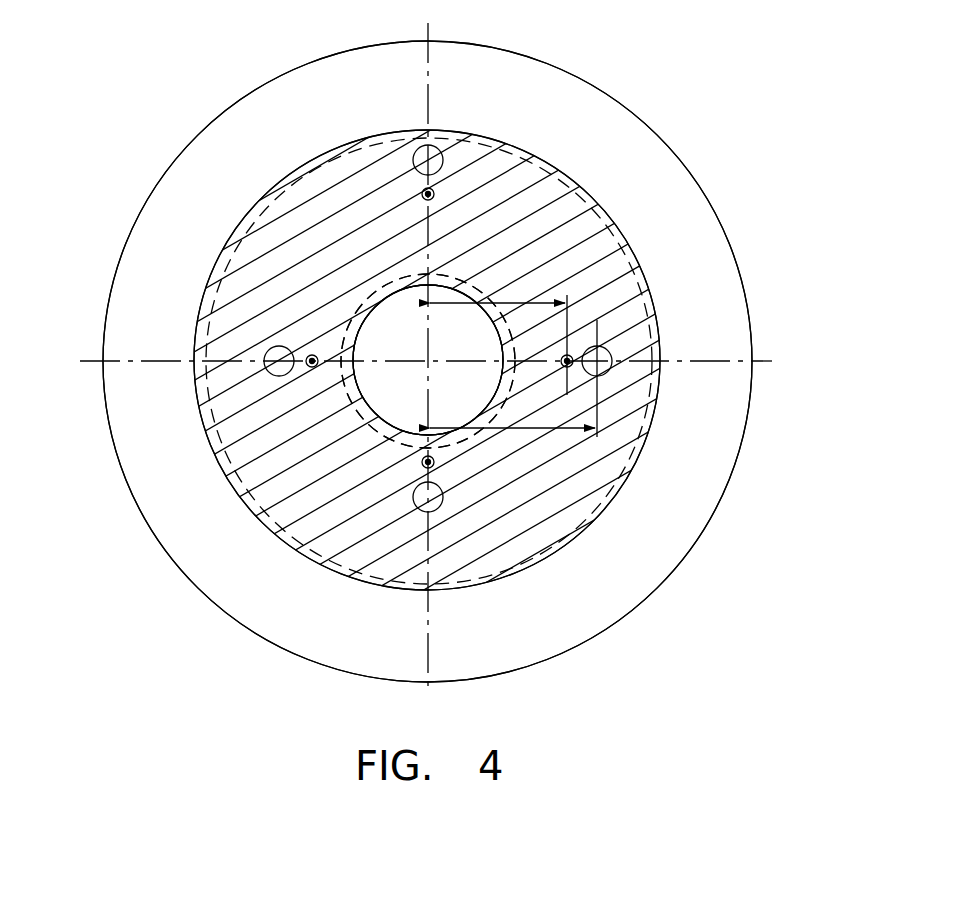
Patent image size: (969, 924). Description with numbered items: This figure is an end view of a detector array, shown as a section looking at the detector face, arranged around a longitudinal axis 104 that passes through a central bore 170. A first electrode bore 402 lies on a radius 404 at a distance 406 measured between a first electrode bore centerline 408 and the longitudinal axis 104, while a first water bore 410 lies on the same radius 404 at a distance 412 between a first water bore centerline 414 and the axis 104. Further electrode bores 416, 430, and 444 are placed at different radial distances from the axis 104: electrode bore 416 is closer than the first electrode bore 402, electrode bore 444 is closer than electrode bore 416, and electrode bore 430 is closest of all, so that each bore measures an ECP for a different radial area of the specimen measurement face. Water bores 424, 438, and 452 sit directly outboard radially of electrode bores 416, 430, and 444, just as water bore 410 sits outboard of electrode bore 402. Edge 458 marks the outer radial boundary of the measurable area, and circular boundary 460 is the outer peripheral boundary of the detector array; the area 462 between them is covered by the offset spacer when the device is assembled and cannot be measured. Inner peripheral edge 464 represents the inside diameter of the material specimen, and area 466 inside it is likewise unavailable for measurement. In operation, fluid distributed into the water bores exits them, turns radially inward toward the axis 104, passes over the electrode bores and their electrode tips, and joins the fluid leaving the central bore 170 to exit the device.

The longitudinal axis 104 is at (428, 363).
The central bore 170 is at (402, 298).
The first electrode bore 402 is at (507, 350).
The radius 404 is at (765, 358).
The distance 406 is at (515, 298).
The first electrode bore centerline 408 is at (590, 303).
The first water bore 410 is at (610, 353).
The distance 412 is at (510, 432).
The first water bore centerline 414 is at (597, 400).
The electrode bore 416 is at (430, 388).
The water bore 424 is at (365, 325).
The electrode bore 430 is at (428, 360).
The water bore 438 is at (268, 352).
The electrode bore 444 is at (421, 194).
The water bore 452 is at (440, 150).
The edge 458 is at (207, 262).
The circular boundary 460 is at (158, 183).
The area 462 is at (198, 308).
The inner peripheral edge 464 is at (413, 440).
The area 466 is at (455, 278).